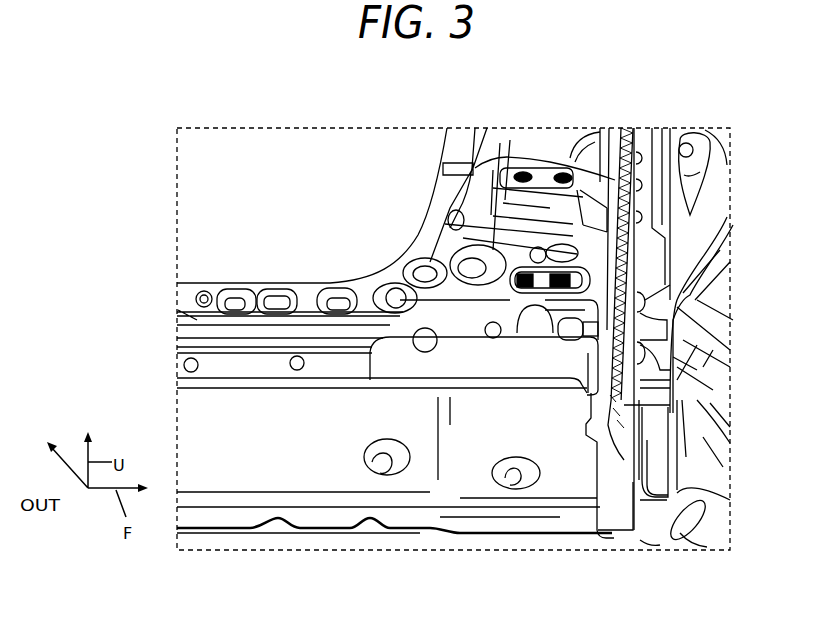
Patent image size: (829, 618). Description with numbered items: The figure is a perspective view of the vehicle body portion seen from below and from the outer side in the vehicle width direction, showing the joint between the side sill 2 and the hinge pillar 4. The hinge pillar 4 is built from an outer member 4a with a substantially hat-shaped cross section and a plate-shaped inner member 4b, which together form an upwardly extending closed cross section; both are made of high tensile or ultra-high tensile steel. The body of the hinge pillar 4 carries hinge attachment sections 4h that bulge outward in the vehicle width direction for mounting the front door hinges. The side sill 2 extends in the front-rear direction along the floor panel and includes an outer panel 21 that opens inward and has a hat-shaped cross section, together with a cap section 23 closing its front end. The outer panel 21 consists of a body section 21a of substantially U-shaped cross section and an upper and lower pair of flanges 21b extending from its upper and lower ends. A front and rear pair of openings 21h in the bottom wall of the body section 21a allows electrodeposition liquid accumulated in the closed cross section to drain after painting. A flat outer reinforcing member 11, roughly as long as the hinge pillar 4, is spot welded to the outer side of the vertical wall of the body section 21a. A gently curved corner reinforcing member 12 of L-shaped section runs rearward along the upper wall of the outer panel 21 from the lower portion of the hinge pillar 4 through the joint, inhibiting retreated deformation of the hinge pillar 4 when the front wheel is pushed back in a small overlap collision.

The side sill 2 is at (607, 538).
The hinge pillar 4 is at (646, 128).
The outer member 4a is at (493, 135).
The inner member 4b is at (718, 183).
The hinge attachment section 4h is at (528, 177).
The outer reinforcing member 11 is at (447, 327).
The corner reinforcing member 12 is at (310, 300).
The outer panel 21 is at (300, 520).
The body section 21a is at (198, 364).
The flange 21b is at (208, 517).
The opening 21h is at (384, 470).
The cap section 23 is at (650, 495).